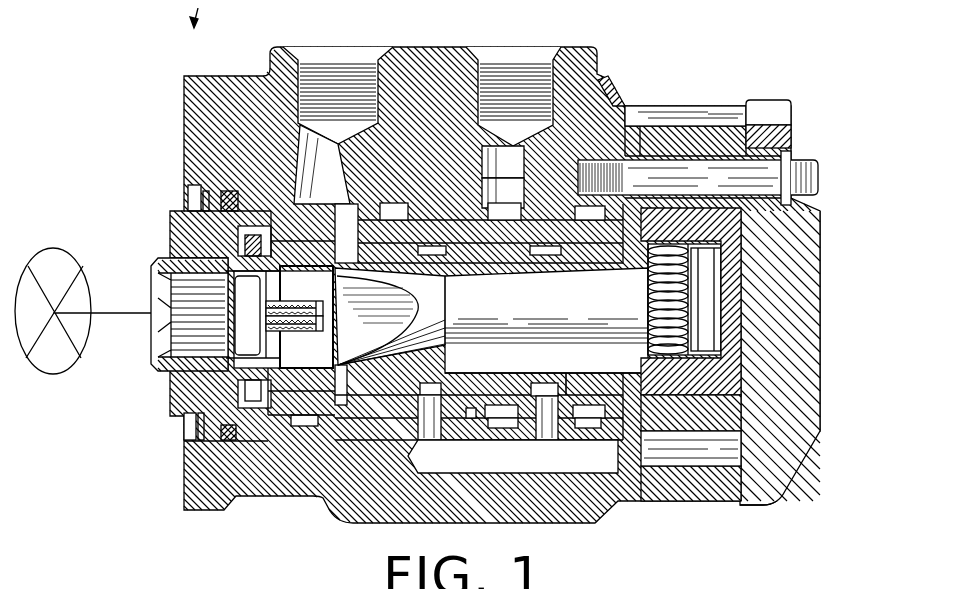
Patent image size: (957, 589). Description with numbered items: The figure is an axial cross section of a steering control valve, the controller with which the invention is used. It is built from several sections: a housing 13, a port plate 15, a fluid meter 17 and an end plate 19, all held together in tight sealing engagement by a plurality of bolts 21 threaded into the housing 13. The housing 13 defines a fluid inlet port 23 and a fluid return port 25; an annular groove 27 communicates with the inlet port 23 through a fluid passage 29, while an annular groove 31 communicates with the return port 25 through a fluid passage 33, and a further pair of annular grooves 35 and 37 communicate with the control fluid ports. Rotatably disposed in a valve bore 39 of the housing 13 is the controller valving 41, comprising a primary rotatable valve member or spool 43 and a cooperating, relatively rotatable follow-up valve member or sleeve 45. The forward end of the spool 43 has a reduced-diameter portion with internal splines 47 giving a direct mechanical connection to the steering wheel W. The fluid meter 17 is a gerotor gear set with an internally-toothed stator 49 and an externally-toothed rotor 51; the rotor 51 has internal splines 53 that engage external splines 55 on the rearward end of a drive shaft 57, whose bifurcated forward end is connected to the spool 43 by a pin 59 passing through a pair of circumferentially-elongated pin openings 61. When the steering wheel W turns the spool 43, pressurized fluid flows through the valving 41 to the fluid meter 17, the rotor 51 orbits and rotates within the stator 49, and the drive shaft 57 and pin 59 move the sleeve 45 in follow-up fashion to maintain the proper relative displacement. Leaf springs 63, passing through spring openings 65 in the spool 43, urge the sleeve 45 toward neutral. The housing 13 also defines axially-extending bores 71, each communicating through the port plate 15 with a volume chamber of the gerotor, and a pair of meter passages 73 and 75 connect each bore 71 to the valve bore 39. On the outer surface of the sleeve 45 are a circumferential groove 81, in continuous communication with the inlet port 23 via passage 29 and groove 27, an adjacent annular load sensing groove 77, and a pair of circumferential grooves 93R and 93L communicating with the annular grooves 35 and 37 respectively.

The housing 13 is at (578, 55).
The port plate 15 is at (620, 122).
The fluid meter 17 is at (705, 99).
The end plate 19 is at (785, 122).
The bolts 21 is at (812, 168).
The fluid inlet port 23 is at (517, 65).
The fluid return port 25 is at (340, 63).
The annular groove 27 is at (510, 200).
The fluid passage 29 is at (498, 145).
The annular groove 31 is at (280, 200).
The fluid passage 33 is at (312, 146).
The annular groove 35 is at (520, 208).
The annular groove 37 is at (390, 200).
The valve bore 39 is at (432, 212).
The controller valving 41 is at (568, 358).
The primary rotatable valve member (spool) 43 is at (502, 248).
The follow-up valve member (sleeve) 45 is at (503, 378).
The internal splines 47 is at (163, 343).
The internally-toothed stator 49 is at (717, 440).
The externally-toothed rotor 51 is at (720, 381).
The internal splines 53 is at (718, 233).
The external splines 55 is at (637, 302).
The drive shaft 57 is at (491, 320).
The pin 59 is at (345, 347).
The pin openings 61 is at (335, 275).
The leaf springs 63 is at (305, 295).
The spring openings 65 is at (293, 326).
The axially-extending bores 71 is at (517, 455).
The meter passage 73 is at (423, 424).
The meter passage 75 is at (537, 423).
The annular load sensing groove 77 is at (463, 403).
The circumferential groove 81 is at (463, 375).
The circumferential groove 93L is at (437, 314).
The circumferential groove 93R is at (560, 375).
The steering wheel W is at (65, 240).